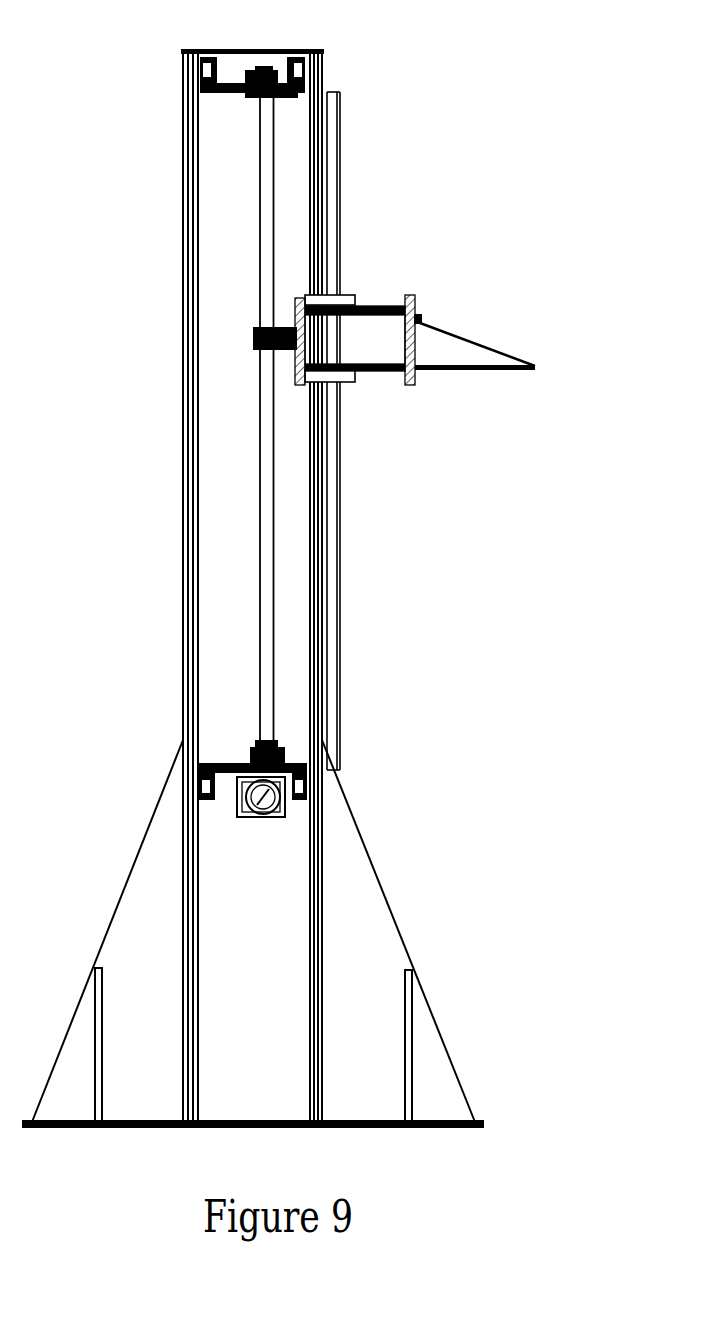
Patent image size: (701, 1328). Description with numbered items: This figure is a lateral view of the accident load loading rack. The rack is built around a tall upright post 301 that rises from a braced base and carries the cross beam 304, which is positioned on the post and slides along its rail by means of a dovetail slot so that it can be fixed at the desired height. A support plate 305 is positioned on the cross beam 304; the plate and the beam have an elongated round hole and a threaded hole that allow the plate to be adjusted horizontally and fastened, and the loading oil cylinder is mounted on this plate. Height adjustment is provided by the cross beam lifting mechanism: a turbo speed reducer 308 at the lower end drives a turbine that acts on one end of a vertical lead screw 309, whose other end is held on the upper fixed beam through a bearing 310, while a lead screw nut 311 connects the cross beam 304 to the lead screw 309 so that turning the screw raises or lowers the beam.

The upright post 301 is at (253, 588).
The cross beam 304 is at (368, 286).
The support plate 305 is at (474, 279).
The turbo speed reducer 308 is at (310, 718).
The lead screw 309 is at (332, 418).
The bearing 310 is at (301, 49).
The lead screw nut 311 is at (365, 431).